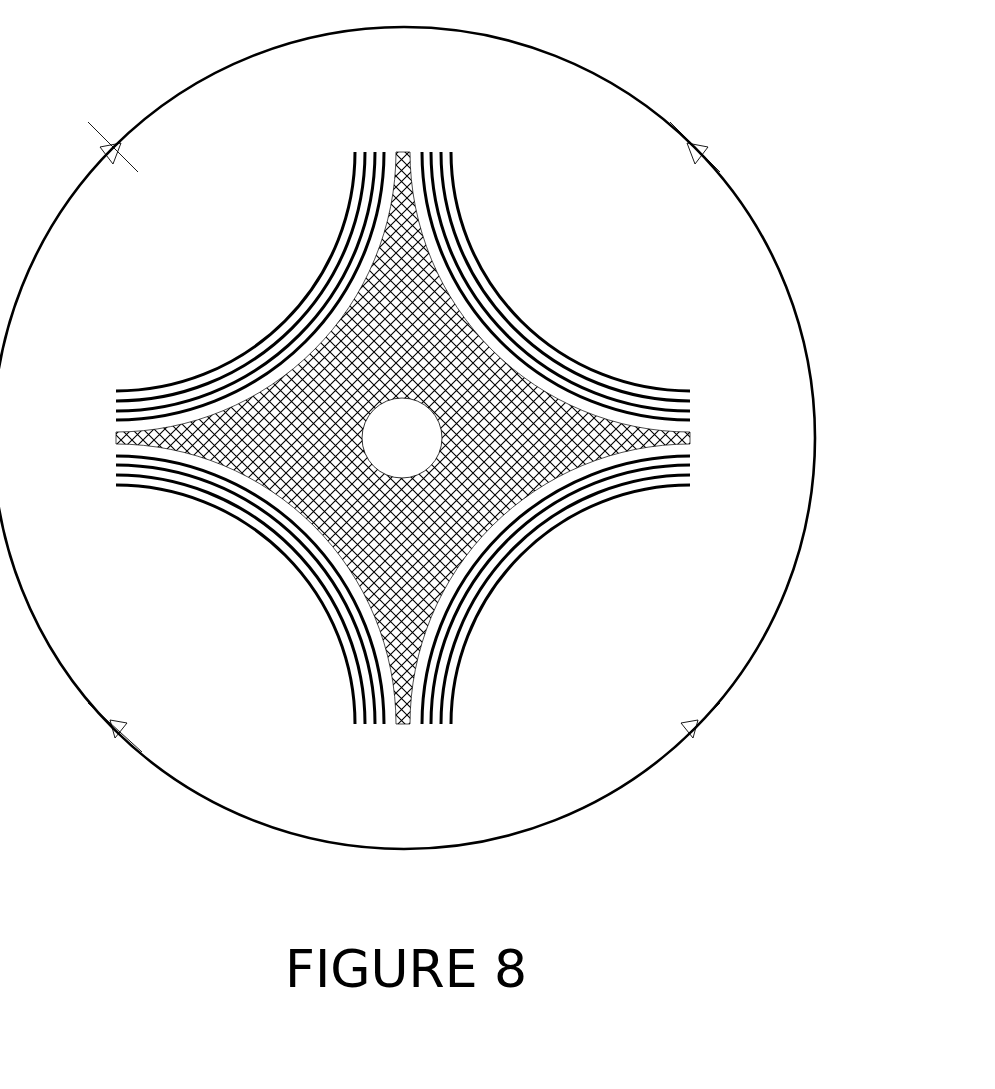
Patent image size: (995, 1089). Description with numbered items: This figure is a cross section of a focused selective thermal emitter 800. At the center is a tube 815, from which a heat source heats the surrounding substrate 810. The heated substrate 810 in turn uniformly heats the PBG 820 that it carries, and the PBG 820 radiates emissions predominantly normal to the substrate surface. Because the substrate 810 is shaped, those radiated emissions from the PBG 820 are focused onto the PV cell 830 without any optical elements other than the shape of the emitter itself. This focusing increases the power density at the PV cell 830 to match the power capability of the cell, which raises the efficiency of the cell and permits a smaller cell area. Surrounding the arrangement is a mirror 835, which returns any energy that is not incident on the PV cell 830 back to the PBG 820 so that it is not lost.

The focused selective thermal emitter 800 is at (670, 856).
The substrate 810 is at (381, 361).
The tube 815 is at (380, 451).
The PBG 820 is at (708, 390).
The PV cell 830 is at (695, 150).
The mirror 835 is at (589, 70).